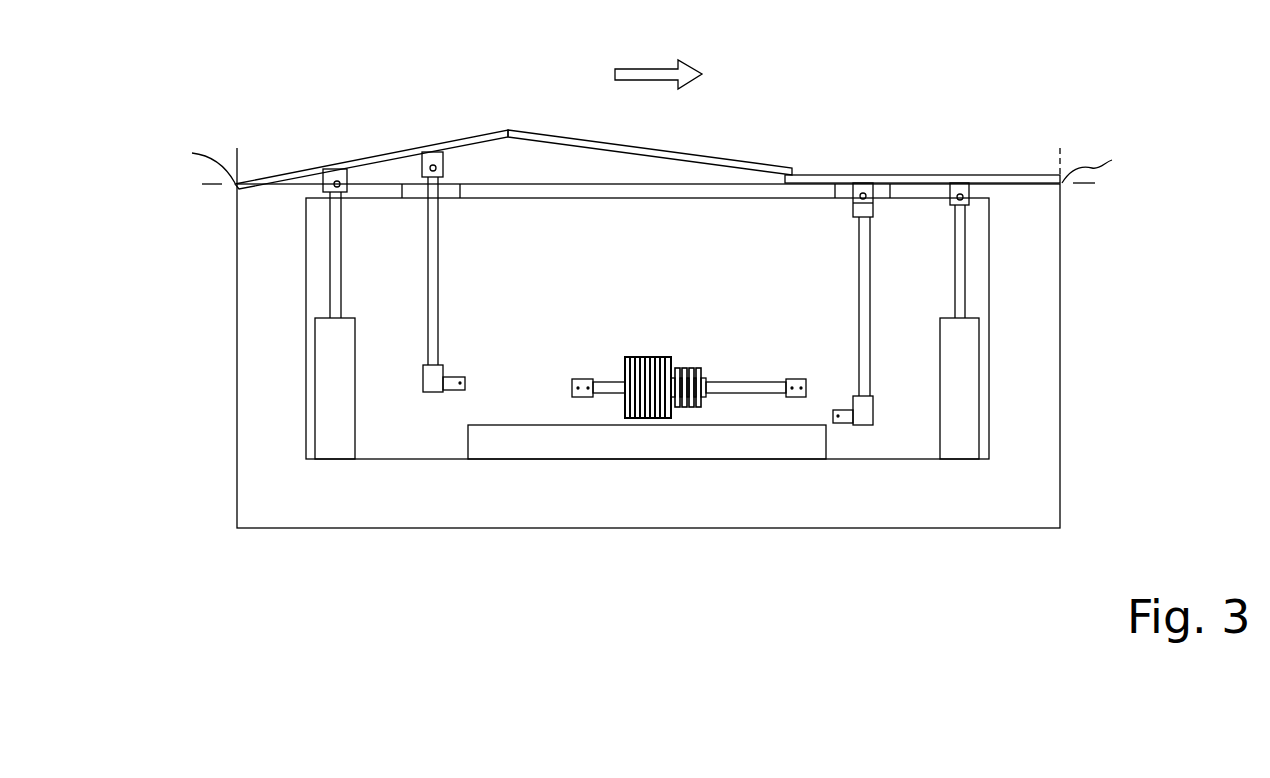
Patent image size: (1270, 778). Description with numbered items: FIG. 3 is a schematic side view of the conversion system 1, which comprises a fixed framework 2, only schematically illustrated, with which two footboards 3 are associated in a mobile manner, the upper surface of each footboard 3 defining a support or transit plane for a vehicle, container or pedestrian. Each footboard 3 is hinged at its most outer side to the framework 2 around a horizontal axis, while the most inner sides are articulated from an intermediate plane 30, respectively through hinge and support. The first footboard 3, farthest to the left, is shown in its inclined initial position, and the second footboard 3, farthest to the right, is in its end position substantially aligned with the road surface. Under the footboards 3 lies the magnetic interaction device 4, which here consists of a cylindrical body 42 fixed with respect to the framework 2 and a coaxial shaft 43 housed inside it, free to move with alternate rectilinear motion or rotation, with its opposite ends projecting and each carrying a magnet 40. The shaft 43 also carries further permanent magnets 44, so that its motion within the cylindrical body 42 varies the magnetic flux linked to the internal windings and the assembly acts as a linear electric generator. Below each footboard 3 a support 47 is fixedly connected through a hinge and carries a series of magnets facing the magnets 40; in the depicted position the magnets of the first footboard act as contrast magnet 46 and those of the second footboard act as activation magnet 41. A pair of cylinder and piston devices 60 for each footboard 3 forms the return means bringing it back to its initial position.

The system 1 is at (1121, 91).
The fixed framework 2 is at (991, 399).
The footboard 3 is at (378, 152).
The intermediate plane 30 is at (594, 140).
The magnetic interaction device 4 is at (649, 316).
The magnet 40 is at (585, 380).
The activation magnet 41 is at (845, 420).
The cylindrical body 42 is at (645, 358).
The shaft 43 is at (737, 380).
The permanent magnets 44 is at (690, 367).
The contrast magnet 46 is at (453, 390).
The support 47 is at (424, 287).
The cylinder and piston devices 60 is at (322, 398).